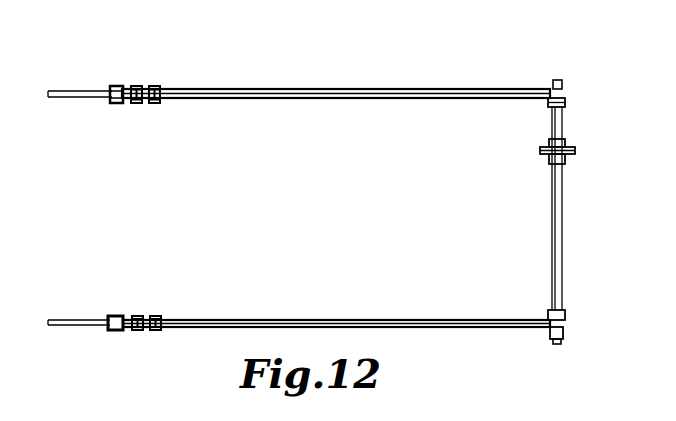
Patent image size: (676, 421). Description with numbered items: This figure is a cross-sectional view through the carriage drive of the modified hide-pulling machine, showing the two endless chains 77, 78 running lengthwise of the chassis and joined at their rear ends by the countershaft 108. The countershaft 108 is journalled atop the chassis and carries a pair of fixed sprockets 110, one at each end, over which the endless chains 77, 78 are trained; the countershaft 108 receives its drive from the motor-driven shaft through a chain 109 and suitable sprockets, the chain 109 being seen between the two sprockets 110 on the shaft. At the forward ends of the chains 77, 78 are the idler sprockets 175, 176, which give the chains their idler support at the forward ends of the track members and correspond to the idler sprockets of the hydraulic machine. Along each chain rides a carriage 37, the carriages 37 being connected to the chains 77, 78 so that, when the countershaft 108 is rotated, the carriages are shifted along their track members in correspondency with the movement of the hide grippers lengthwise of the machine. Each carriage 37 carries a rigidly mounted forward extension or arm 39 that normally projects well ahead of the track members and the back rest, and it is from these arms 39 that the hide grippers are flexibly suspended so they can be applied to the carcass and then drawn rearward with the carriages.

The carriage 37 is at (140, 103).
The forward extension or arm 39 is at (92, 91).
The endless chain 77 is at (343, 83).
The endless chain 78 is at (370, 313).
The countershaft 108 is at (559, 217).
The chain 109 is at (566, 150).
The fixed sprocket 110 is at (563, 85).
The idler sprocket 175 is at (118, 86).
The idler sprocket 176 is at (112, 331).